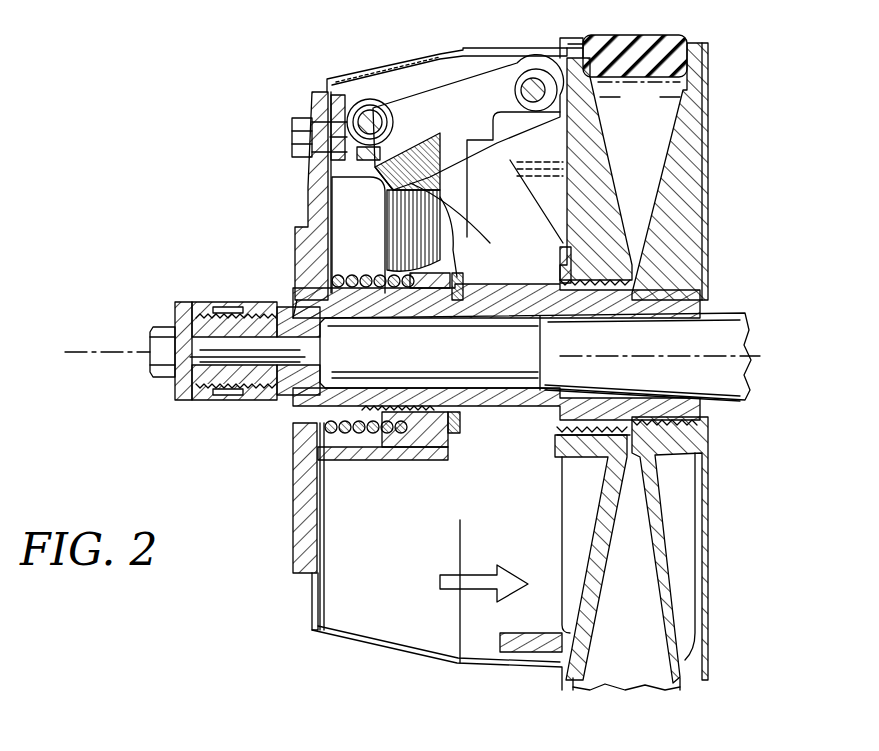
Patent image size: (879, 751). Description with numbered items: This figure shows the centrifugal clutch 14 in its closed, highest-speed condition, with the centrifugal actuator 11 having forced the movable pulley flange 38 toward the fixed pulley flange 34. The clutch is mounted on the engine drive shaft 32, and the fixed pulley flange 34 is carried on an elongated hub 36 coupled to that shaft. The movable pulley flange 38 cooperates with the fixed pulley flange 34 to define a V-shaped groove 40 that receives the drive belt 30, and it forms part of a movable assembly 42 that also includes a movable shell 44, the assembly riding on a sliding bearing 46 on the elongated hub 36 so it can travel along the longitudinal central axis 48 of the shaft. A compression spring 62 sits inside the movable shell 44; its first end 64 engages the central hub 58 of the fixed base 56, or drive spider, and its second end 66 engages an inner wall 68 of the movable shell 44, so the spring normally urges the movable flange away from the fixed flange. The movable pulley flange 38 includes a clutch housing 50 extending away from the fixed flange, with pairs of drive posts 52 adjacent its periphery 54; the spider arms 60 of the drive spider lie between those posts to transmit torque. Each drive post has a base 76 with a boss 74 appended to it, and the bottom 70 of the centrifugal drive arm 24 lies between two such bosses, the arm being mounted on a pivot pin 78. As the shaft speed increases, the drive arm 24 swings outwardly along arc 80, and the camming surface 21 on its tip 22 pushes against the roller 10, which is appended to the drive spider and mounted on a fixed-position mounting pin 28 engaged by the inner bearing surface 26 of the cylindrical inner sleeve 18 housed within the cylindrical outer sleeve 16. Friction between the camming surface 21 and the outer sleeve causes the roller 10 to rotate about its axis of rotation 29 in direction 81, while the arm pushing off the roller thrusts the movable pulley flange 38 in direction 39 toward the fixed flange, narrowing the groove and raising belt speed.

The roller 10 is at (377, 84).
The centrifugal actuator 11 is at (400, 82).
The centrifugal clutch 14 is at (218, 189).
The cylindrical outer sleeve 16 is at (393, 102).
The cylindrical inner sleeve 18 is at (340, 109).
The camming surface 21 is at (443, 80).
The tip 22 is at (458, 54).
The centrifugal drive arm 24 is at (443, 176).
The inner bearing surface 26 is at (362, 150).
The mounting pin 28 is at (428, 141).
The axis of rotation 29 is at (353, 112).
The drive belt 30 is at (650, 38).
The engine drive shaft 32 is at (722, 322).
The fixed pulley flange 34 is at (689, 190).
The elongated hub 36 is at (692, 410).
The movable pulley flange 38 is at (606, 208).
The direction 39 is at (470, 588).
The V-shaped groove 40 is at (624, 146).
The movable assembly 42 is at (311, 599).
The movable shell 44 is at (327, 80).
The sliding bearing 46 is at (553, 430).
The longitudinal central axis 48 is at (125, 352).
The clutch housing 50 is at (559, 262).
The drive posts 52 is at (502, 148).
The periphery 54 is at (576, 38).
The fixed base 56 is at (384, 236).
The central hub 58 is at (440, 460).
The spider arms 60 is at (327, 175).
The compression spring 62 is at (365, 440).
The first end 64 is at (403, 435).
The second end 66 is at (326, 434).
The inner wall 68 is at (322, 556).
The bottom 70 is at (538, 114).
The boss 74 is at (556, 62).
The base 76 is at (550, 194).
The pivot pin 78 is at (531, 108).
The arc 80 is at (468, 230).
The direction 81 is at (317, 165).